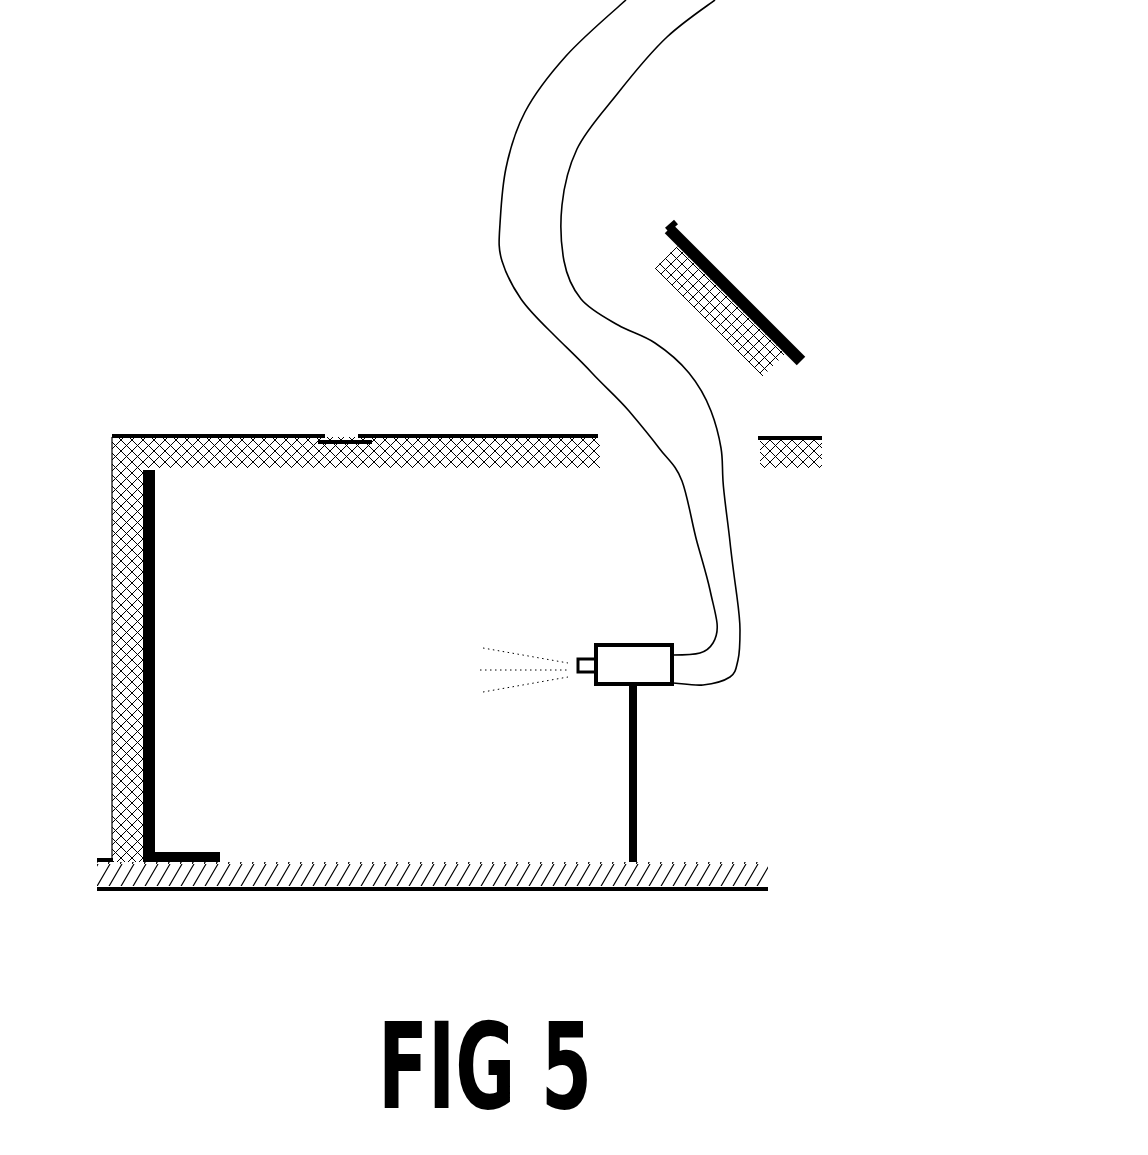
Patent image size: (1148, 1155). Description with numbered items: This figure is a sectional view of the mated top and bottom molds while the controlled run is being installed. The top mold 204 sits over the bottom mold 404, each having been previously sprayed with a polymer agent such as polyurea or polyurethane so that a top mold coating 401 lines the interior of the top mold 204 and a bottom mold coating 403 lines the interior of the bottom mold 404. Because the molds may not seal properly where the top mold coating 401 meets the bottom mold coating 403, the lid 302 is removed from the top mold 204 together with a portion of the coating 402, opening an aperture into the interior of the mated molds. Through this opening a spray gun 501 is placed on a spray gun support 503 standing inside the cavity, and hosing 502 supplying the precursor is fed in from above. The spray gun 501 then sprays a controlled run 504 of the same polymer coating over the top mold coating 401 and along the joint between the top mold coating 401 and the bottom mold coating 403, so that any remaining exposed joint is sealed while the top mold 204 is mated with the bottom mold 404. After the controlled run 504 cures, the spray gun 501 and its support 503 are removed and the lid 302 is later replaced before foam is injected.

The top mold 204 is at (170, 433).
The lid 302 is at (726, 270).
The top mold coating 401 is at (578, 468).
The portion of the coating 402 is at (748, 345).
The bottom mold coating 403 is at (412, 878).
The bottom mold 404 is at (228, 890).
The spray gun 501 is at (637, 657).
The hosing 502 is at (697, 542).
The spray gun support 503 is at (640, 786).
The controlled run 504 is at (158, 722).